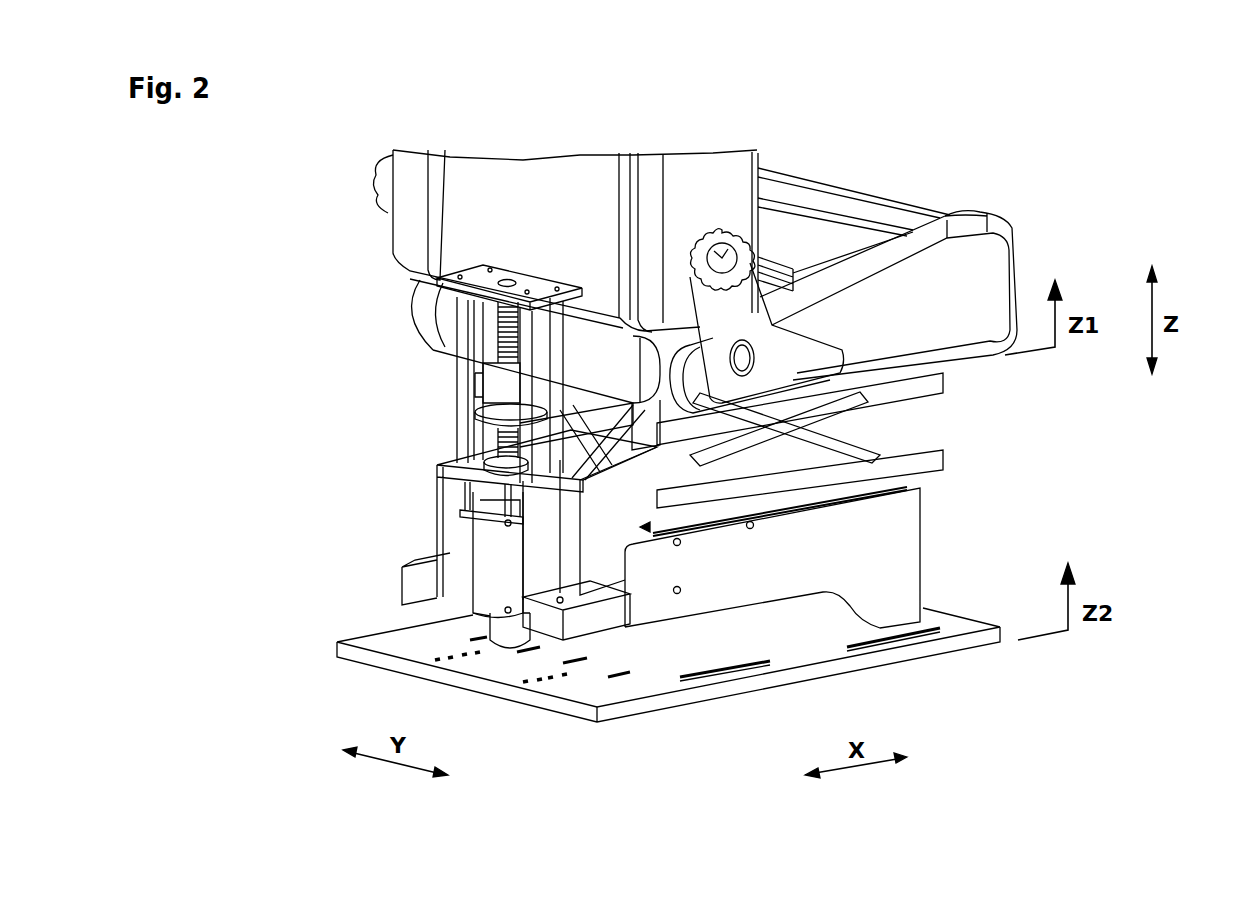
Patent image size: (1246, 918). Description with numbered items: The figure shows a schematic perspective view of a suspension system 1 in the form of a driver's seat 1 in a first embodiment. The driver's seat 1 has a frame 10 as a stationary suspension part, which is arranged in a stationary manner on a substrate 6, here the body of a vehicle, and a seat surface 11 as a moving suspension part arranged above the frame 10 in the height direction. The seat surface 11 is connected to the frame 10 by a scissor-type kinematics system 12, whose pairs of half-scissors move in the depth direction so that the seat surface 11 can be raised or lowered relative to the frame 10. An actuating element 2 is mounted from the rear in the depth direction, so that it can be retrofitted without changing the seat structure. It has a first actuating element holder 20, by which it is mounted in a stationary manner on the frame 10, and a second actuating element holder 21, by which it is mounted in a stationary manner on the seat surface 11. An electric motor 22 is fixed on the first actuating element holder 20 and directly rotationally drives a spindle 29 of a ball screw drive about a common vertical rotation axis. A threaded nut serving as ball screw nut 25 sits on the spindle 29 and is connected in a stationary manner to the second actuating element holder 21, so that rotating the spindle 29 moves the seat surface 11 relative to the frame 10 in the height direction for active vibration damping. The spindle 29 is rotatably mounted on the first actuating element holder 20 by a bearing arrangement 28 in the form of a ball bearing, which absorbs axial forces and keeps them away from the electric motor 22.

The suspension system 1 is at (222, 205).
The actuating element 2 is at (310, 477).
The substrate 6 is at (655, 703).
The frame 10 is at (903, 523).
The seat surface 11 is at (964, 250).
The scissor-type kinematics system 12 is at (866, 437).
The first actuating element holder 20 is at (412, 580).
The second actuating element holder 21 is at (588, 422).
The electric motor 22 is at (497, 602).
The ball screw nut 25 is at (500, 388).
The bearing arrangement 28 is at (492, 500).
The spindle 29 is at (492, 440).